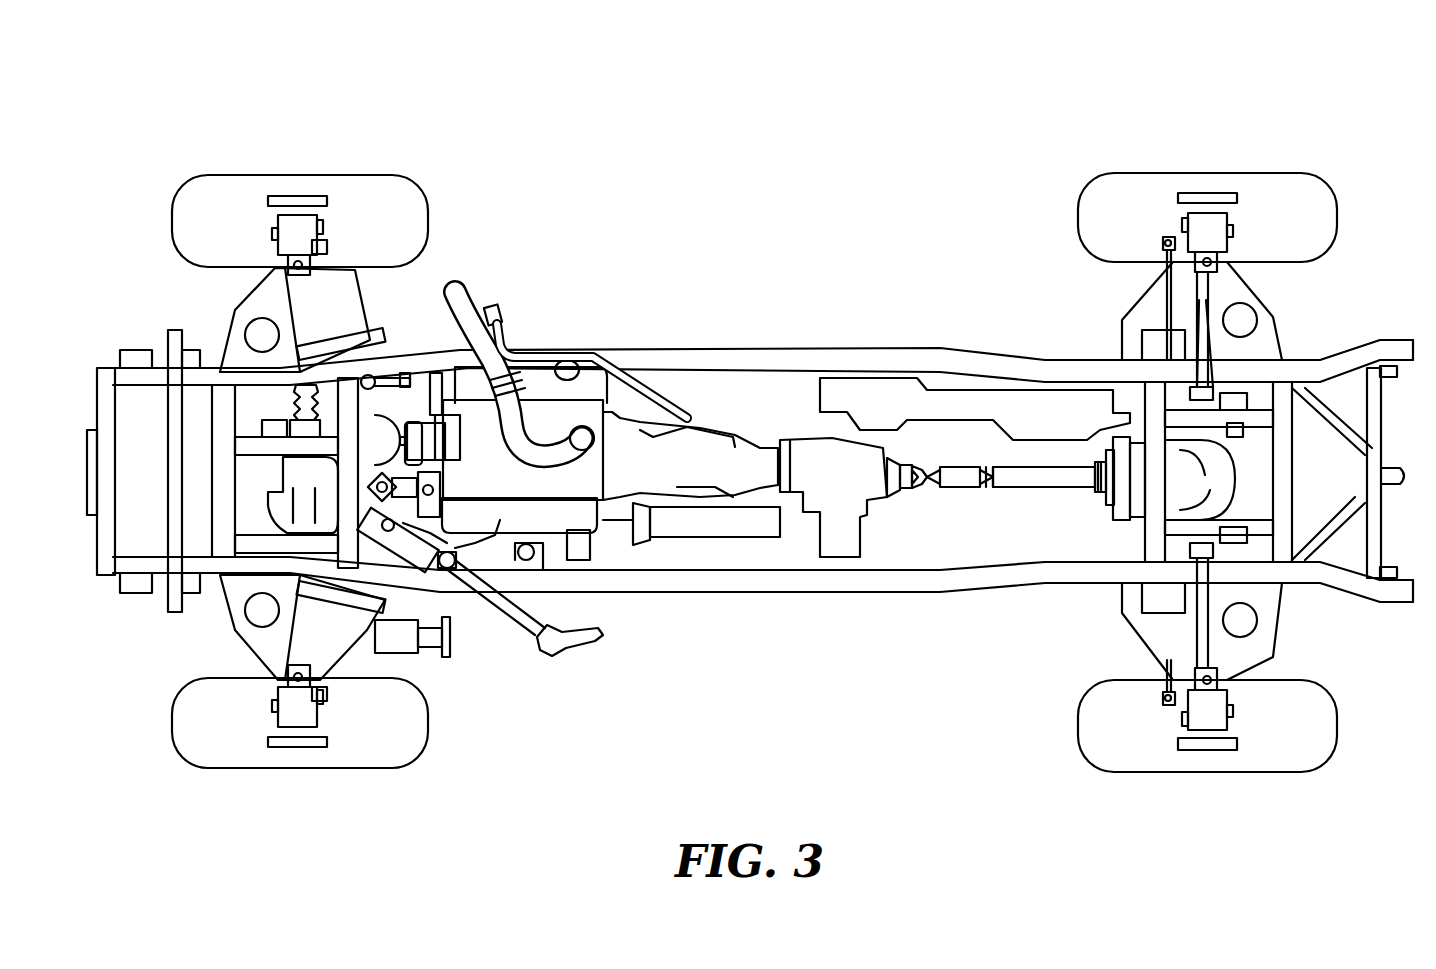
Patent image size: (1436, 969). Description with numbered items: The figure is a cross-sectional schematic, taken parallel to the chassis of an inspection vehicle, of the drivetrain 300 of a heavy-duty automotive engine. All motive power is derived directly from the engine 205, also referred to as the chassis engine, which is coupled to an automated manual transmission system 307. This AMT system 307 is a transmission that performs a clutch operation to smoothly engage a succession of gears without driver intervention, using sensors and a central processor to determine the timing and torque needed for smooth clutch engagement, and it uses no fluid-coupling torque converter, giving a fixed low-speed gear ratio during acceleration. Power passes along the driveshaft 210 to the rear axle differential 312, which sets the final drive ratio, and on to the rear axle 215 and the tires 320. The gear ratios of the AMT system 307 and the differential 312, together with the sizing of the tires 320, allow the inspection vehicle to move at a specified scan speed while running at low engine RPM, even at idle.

The drivetrain 300 is at (872, 148).
The engine 205 is at (533, 397).
The automated manual transmission system 307 is at (645, 400).
The rear axle differential 312 is at (1185, 463).
The rear axle 215 is at (1203, 372).
The driveshaft 210 is at (710, 537).
The tires 320 is at (1275, 770).